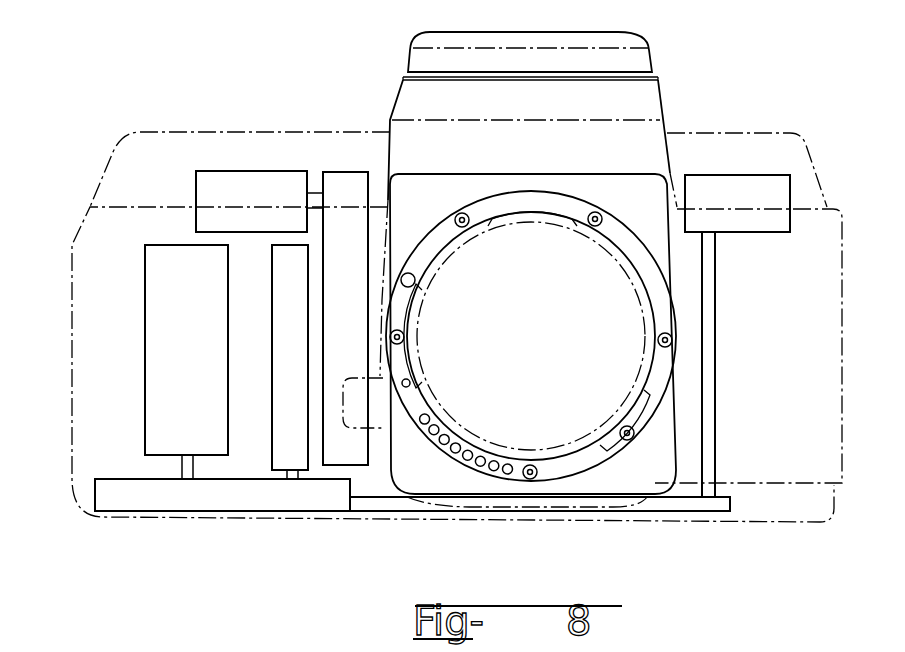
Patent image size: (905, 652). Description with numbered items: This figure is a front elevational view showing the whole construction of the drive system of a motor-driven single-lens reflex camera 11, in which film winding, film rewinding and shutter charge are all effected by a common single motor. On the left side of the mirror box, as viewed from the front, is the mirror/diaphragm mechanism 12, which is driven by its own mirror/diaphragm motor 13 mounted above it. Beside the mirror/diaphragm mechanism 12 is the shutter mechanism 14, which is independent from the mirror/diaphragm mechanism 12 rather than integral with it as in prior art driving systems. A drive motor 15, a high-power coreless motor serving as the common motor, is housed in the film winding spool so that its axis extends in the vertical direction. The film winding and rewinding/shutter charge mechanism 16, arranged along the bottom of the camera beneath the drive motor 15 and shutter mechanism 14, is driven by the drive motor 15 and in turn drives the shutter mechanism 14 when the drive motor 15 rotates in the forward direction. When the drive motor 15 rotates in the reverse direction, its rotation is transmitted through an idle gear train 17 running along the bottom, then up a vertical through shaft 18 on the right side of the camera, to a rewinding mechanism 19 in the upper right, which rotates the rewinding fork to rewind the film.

The single-lens reflex camera 11 is at (690, 157).
The mirror/diaphragm mechanism 12 is at (343, 182).
The mirror/diaphragm motor 13 is at (252, 182).
The shutter mechanism 14 is at (283, 462).
The drive motor 15 is at (162, 413).
The film winding and rewinding/shutter charge mechanism 16 is at (178, 498).
The idle gear train 17 is at (670, 507).
The through shaft 18 is at (715, 465).
The rewinding mechanism 19 is at (755, 188).